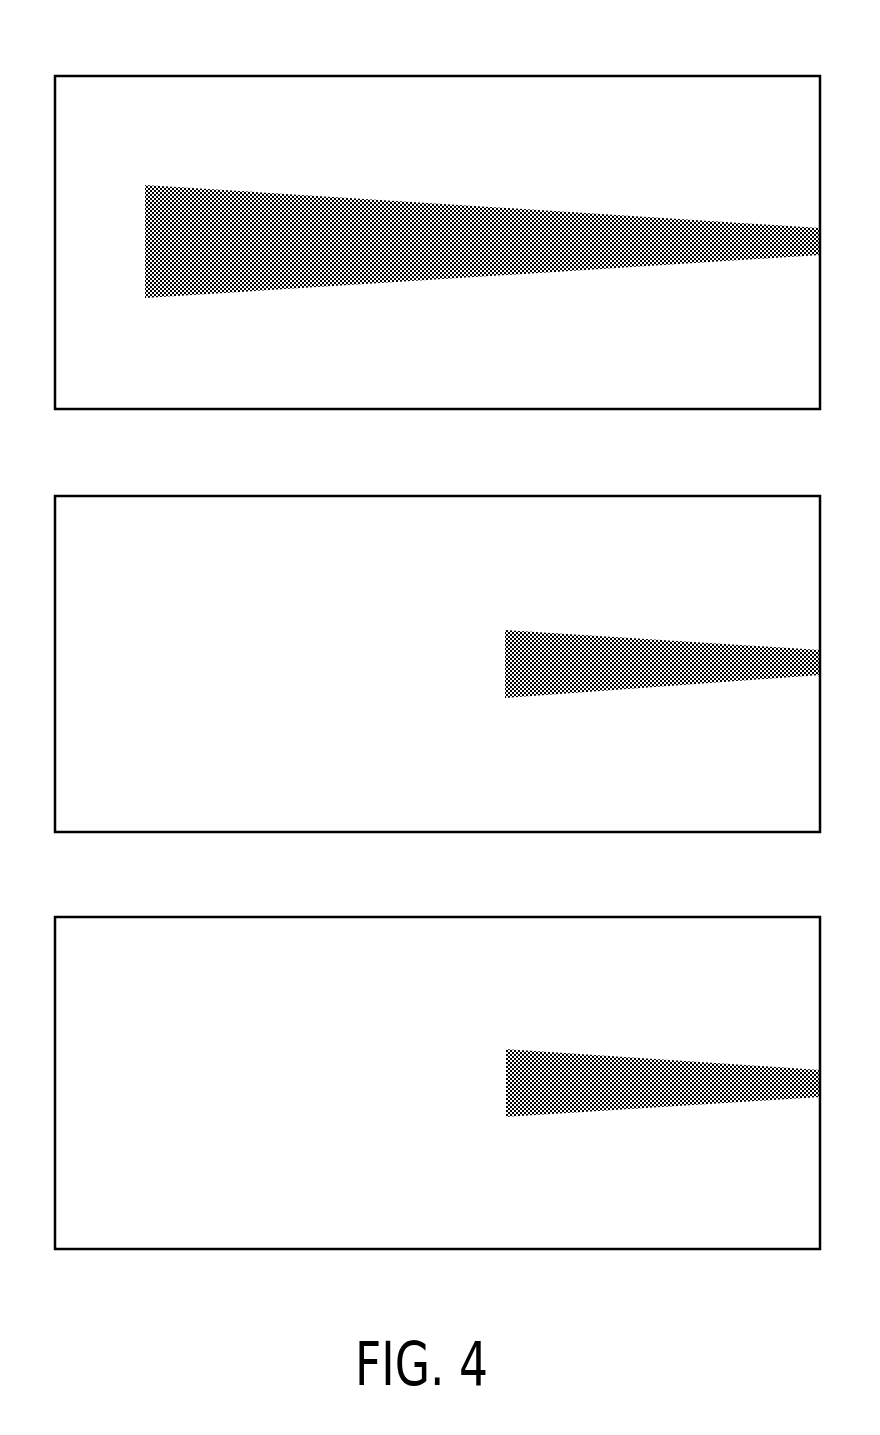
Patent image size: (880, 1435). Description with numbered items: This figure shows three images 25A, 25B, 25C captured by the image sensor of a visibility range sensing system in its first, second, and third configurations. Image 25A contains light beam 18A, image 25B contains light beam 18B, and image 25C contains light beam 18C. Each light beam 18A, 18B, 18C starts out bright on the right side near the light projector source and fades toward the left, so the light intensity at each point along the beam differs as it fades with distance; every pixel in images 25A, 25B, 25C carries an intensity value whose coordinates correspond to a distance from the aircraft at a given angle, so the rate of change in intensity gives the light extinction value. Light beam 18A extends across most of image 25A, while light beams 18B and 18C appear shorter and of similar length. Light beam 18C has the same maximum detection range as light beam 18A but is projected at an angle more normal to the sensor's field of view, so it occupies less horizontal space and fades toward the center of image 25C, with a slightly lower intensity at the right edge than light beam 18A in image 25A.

The image 25A is at (647, 75).
The light beam 18A is at (647, 222).
The image 25B is at (647, 496).
The light beam 18B is at (647, 642).
The image 25C is at (647, 917).
The light beam 18C is at (647, 1062).